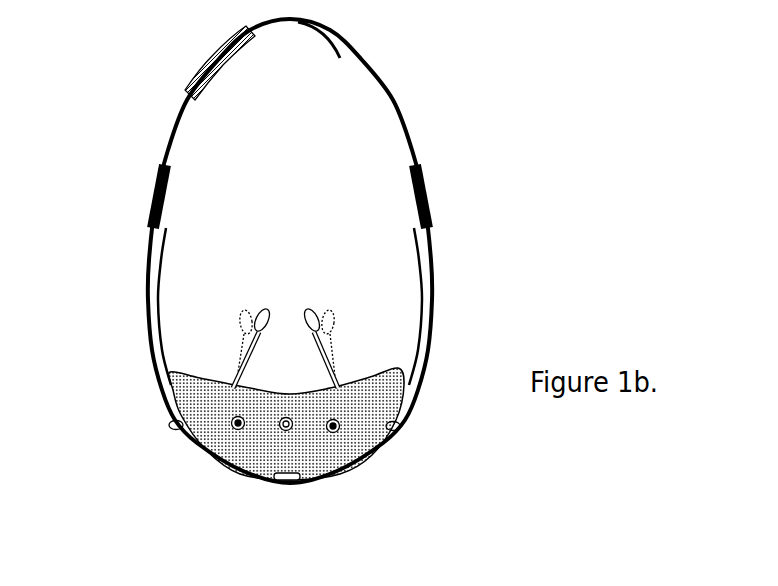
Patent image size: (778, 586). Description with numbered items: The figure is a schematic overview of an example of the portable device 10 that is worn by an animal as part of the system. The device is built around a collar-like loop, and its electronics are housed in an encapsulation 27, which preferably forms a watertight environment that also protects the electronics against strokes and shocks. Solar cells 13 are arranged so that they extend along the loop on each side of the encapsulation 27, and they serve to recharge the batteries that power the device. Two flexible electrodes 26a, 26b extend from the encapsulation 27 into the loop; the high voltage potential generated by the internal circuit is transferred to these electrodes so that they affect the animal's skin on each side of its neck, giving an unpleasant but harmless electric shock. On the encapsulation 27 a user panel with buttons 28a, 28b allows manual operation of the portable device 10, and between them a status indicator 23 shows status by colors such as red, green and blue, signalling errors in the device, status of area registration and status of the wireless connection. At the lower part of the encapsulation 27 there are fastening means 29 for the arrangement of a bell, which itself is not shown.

The portable device 10 is at (140, 82).
The encapsulation 27 is at (381, 82).
The solar cells 13 is at (148, 320).
The status indicator 23 is at (290, 432).
The flexible electrode 26a is at (260, 318).
The flexible electrode 26b is at (313, 318).
The button 28a is at (237, 430).
The button 28b is at (340, 430).
The fastening means 29 is at (290, 484).